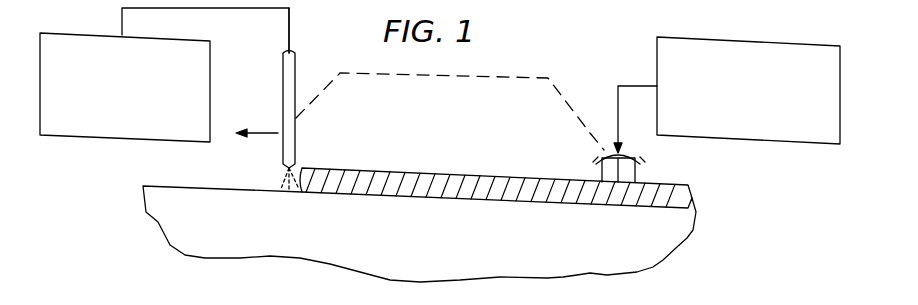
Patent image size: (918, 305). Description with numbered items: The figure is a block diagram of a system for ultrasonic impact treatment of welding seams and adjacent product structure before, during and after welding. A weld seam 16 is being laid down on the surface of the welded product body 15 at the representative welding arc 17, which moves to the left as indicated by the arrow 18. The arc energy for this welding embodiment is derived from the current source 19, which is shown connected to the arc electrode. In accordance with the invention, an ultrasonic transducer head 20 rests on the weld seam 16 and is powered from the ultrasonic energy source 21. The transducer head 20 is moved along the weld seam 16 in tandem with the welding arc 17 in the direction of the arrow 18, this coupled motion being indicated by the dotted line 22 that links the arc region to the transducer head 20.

The welded product body 15 is at (511, 254).
The weld seam 16 is at (380, 177).
The welding arc 17 is at (281, 177).
The arrow 18 is at (257, 120).
The current source 19 is at (90, 142).
The ultrasonic transducer head 20 is at (637, 158).
The ultrasonic energy source 21 is at (657, 53).
The dotted line 22 is at (493, 78).